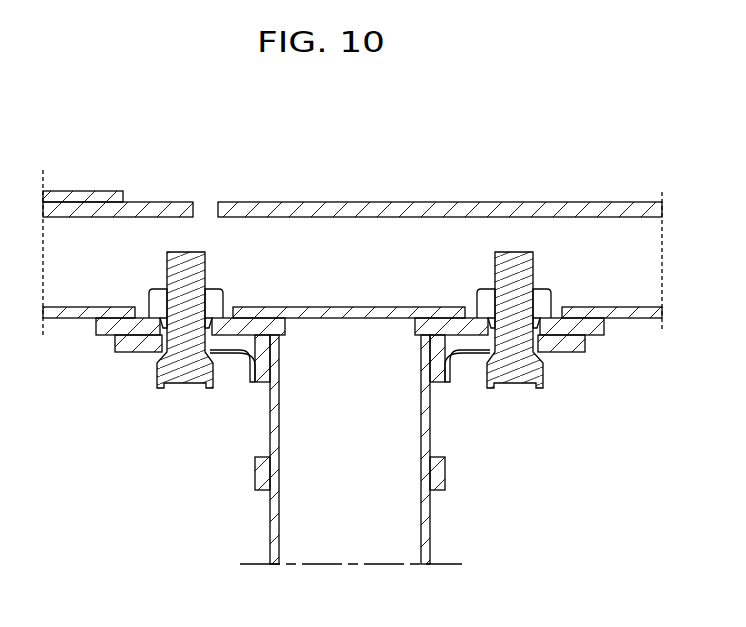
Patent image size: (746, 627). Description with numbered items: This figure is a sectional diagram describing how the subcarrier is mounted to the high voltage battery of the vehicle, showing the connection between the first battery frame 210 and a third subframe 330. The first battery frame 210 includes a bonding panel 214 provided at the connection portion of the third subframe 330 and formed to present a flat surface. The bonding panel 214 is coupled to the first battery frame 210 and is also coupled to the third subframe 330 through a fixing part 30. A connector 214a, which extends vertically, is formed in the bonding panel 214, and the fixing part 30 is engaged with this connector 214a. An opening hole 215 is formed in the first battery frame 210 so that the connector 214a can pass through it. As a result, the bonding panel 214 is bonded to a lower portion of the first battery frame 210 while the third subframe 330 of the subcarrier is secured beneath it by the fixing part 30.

The first battery frame 210 is at (353, 203).
The opening hole 215 is at (233, 307).
The bonding panel 214 is at (131, 345).
The connector 214a is at (155, 298).
The fixing part 30 is at (510, 375).
The third subframe 330 is at (430, 522).